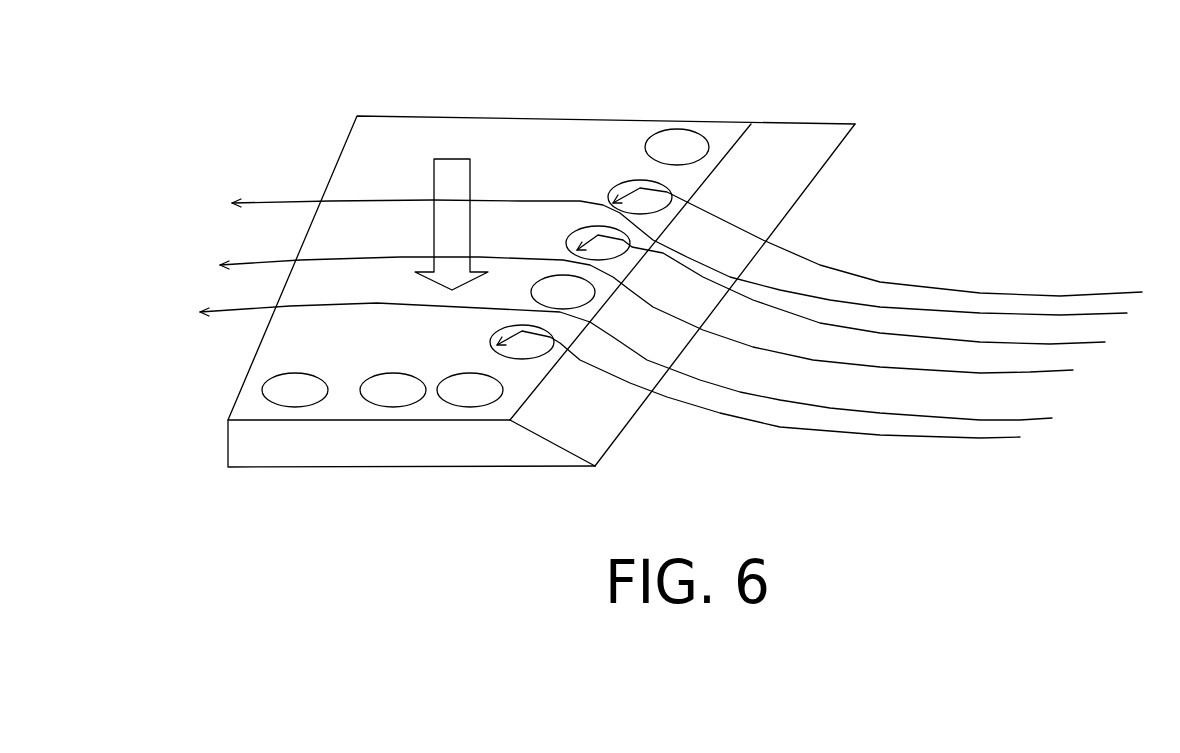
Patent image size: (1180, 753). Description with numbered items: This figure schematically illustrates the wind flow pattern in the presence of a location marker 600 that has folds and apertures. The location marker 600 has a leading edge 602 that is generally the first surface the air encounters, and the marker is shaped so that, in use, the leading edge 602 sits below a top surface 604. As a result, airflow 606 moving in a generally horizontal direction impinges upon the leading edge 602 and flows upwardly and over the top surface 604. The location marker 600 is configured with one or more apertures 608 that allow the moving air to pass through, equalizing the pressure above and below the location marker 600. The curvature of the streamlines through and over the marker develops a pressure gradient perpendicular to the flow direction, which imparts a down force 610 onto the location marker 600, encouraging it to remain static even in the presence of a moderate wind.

The location marker 600 is at (587, 261).
The leading edge 602 is at (820, 177).
The top surface 604 is at (528, 178).
The airflow 606 is at (848, 272).
The apertures 608 is at (675, 147).
The down force 610 is at (468, 234).